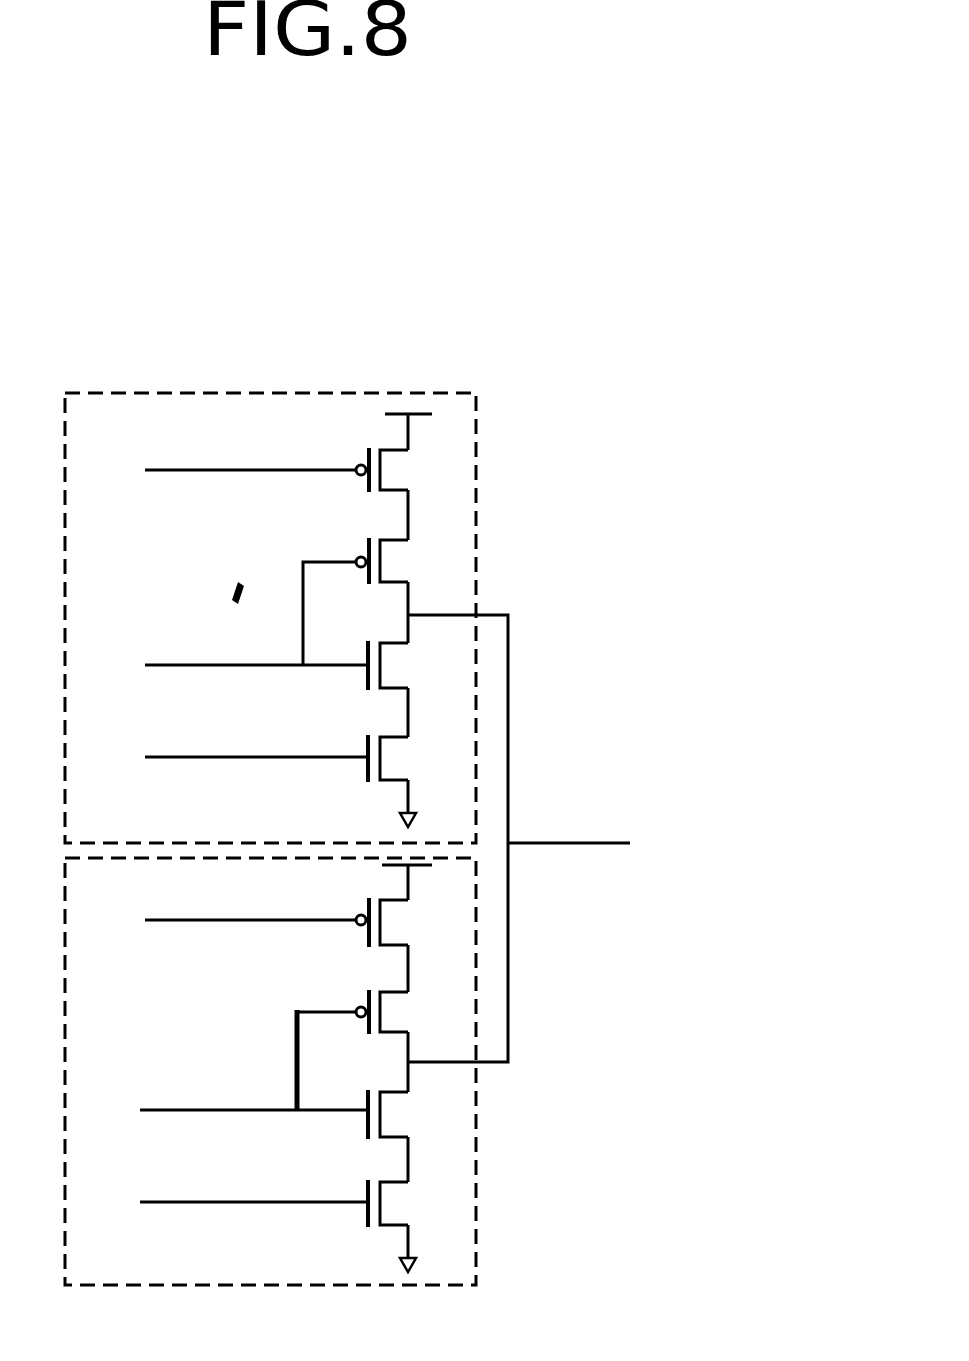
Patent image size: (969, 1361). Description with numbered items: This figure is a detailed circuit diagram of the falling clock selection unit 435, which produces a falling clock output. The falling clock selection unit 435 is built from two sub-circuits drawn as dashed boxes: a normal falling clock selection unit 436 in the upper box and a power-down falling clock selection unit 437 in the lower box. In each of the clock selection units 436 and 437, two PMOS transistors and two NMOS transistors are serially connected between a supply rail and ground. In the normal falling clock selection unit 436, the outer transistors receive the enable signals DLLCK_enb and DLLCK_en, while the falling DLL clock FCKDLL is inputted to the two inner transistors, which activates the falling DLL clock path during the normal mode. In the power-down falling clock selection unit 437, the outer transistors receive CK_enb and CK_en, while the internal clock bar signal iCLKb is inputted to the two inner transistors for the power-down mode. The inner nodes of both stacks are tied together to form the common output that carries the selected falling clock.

The falling clock selection unit 435 is at (720, 274).
The normal falling clock selection unit 436 is at (478, 528).
The power-down falling clock selection unit 437 is at (478, 1170).